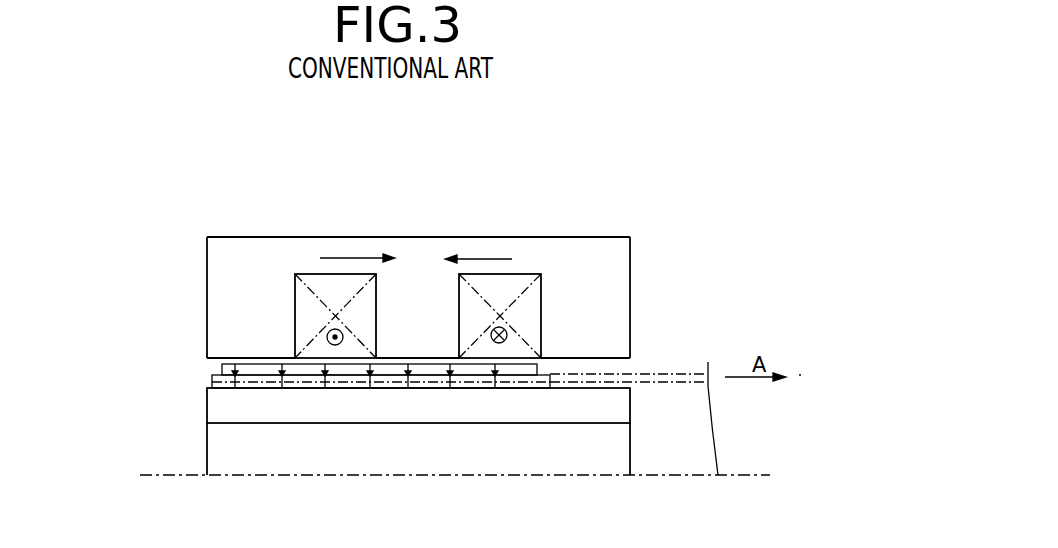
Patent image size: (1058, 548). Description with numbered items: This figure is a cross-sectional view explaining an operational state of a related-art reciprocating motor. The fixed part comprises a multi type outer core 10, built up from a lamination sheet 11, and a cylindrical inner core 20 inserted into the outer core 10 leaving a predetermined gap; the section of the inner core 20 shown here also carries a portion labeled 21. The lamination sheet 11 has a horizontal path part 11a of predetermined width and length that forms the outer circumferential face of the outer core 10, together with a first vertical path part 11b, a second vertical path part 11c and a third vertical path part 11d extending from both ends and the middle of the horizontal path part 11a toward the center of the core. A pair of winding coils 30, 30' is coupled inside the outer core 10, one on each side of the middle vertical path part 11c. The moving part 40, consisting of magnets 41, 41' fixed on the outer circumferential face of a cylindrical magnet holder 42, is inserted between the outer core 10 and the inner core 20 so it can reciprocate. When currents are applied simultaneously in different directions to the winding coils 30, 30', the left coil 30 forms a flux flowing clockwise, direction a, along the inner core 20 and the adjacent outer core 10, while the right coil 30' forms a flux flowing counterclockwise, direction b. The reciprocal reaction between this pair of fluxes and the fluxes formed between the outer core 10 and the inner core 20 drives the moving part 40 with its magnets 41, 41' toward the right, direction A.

The multi type outer core 10 is at (199, 228).
The lamination sheet 11 is at (431, 317).
The horizontal path part 11a is at (405, 246).
The first vertical path part 11b is at (225, 313).
The second vertical path part 11c is at (435, 350).
The third vertical path part 11d is at (607, 304).
The inner core 20 is at (397, 431).
The guide rail 21 is at (612, 408).
The winding coil 30 is at (333, 270).
The winding coil 30' is at (506, 271).
The moving part 40 is at (336, 432).
The magnet 41 is at (257, 450).
The magnet 41' is at (516, 450).
The magnet holder 42 is at (657, 372).